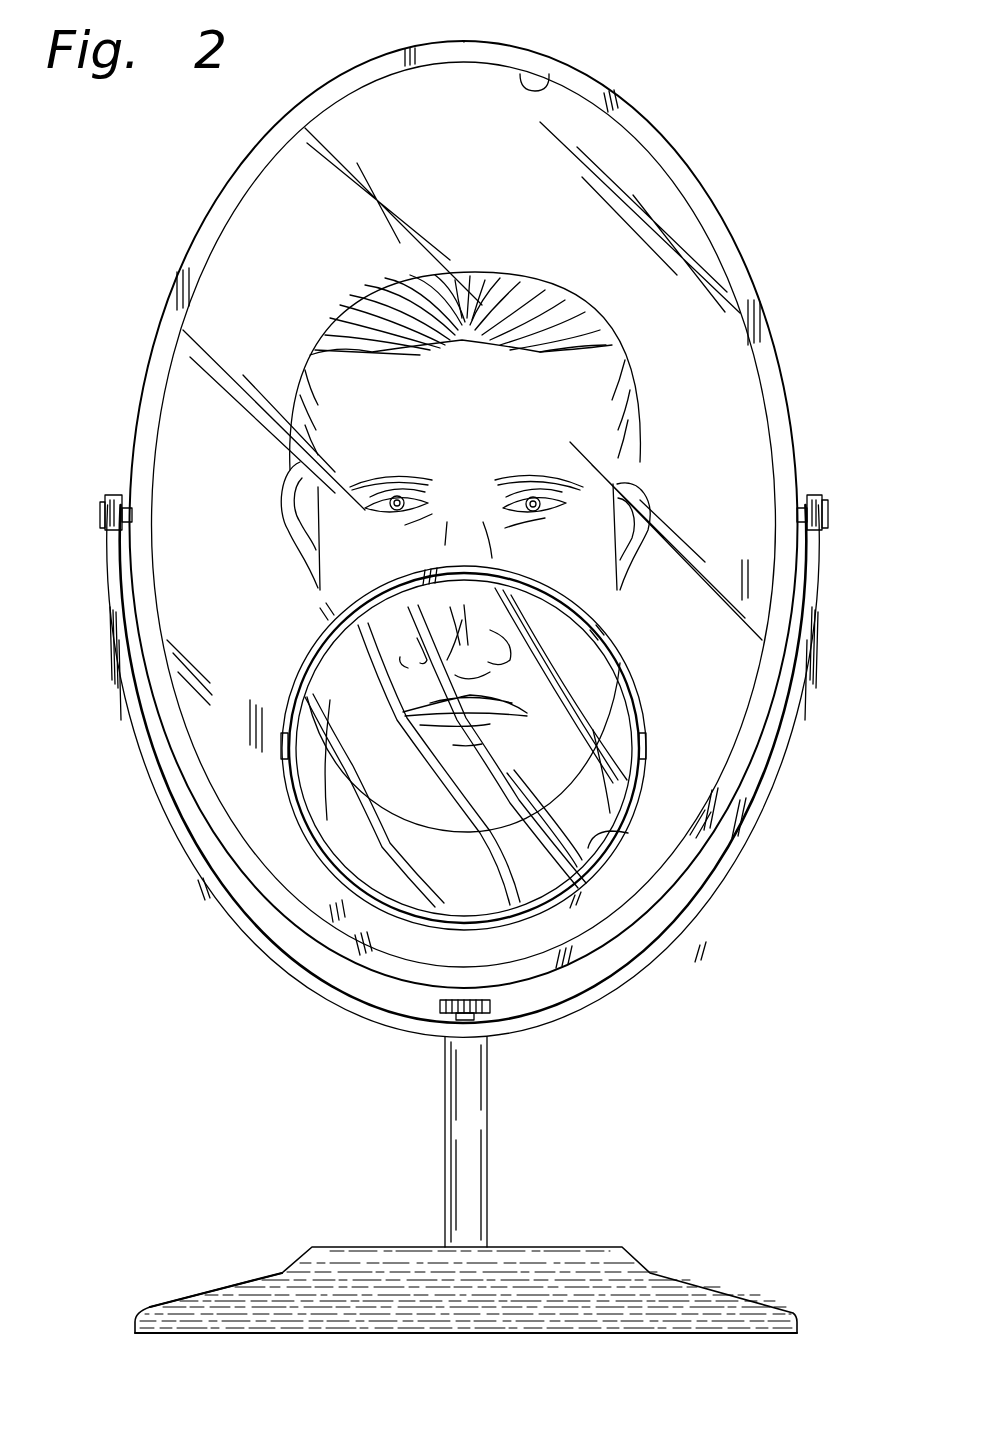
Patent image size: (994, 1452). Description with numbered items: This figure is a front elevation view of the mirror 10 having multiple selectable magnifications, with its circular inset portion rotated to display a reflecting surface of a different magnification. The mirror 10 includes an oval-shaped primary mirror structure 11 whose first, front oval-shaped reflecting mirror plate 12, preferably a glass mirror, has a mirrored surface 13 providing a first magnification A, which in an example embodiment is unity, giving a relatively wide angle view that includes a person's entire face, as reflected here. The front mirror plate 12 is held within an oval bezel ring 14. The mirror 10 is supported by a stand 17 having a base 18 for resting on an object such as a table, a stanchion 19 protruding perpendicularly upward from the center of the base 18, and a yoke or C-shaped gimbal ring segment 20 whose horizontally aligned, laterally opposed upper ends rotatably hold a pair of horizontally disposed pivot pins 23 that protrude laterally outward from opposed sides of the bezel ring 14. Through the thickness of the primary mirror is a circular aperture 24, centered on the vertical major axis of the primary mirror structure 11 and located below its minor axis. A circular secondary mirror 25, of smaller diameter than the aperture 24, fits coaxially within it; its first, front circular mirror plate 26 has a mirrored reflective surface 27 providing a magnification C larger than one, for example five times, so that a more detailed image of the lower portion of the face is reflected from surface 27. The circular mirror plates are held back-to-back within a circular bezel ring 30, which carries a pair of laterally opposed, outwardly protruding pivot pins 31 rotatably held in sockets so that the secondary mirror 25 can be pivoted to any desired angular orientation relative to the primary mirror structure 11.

The mirror 10 is at (180, 224).
The primary mirror structure 11 is at (655, 103).
The front oval-shaped reflecting mirror plate 12 is at (546, 82).
The mirrored surface 13 is at (375, 112).
The oval bezel ring 14 is at (693, 170).
The stand 17 is at (226, 1266).
The base 18 is at (162, 1306).
The stanchion 19 is at (489, 1134).
The C-shaped gimbal ring segment 20 is at (190, 877).
The pivot pins 23 is at (128, 504).
The circular aperture 24 is at (637, 788).
The circular secondary mirror 25 is at (272, 666).
The front circular mirror plate 26 is at (628, 833).
The mirrored reflective surface 27 is at (556, 867).
The circular bezel ring 30 is at (638, 712).
The pivot pins 31 is at (645, 738).